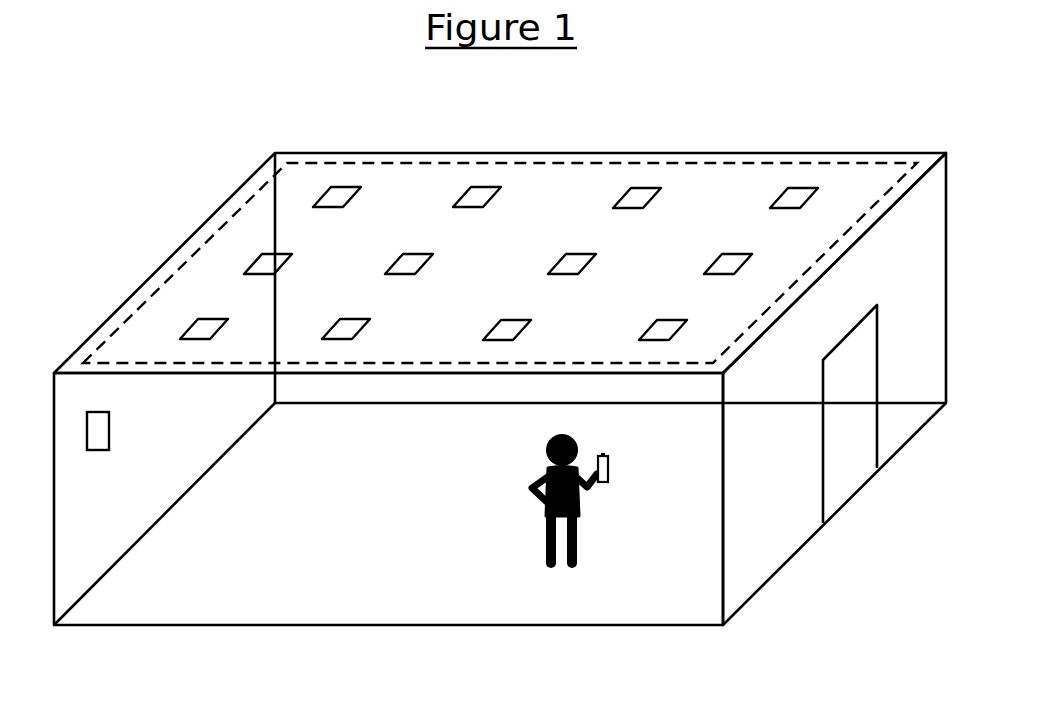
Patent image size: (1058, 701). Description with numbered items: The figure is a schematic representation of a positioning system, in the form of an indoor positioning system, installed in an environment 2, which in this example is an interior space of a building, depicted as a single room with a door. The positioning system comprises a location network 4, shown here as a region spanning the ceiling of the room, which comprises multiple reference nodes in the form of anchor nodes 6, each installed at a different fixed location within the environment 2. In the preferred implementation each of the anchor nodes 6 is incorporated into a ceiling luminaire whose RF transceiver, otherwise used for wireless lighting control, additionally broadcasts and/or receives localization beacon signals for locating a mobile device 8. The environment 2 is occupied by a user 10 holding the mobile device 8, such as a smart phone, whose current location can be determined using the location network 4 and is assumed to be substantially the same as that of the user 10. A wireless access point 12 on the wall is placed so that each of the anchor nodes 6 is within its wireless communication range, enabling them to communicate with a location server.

The environment 2 is at (773, 153).
The location network 4 is at (605, 162).
The anchor nodes 6 is at (661, 189).
The mobile device 8 is at (609, 468).
The user 10 is at (548, 525).
The wireless access point 12 is at (109, 432).